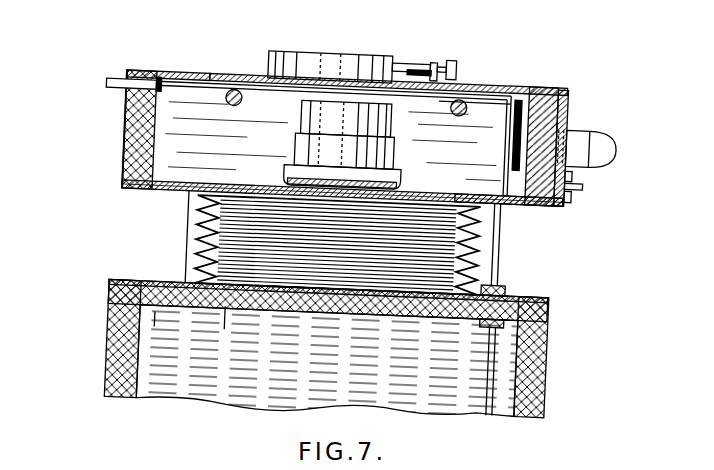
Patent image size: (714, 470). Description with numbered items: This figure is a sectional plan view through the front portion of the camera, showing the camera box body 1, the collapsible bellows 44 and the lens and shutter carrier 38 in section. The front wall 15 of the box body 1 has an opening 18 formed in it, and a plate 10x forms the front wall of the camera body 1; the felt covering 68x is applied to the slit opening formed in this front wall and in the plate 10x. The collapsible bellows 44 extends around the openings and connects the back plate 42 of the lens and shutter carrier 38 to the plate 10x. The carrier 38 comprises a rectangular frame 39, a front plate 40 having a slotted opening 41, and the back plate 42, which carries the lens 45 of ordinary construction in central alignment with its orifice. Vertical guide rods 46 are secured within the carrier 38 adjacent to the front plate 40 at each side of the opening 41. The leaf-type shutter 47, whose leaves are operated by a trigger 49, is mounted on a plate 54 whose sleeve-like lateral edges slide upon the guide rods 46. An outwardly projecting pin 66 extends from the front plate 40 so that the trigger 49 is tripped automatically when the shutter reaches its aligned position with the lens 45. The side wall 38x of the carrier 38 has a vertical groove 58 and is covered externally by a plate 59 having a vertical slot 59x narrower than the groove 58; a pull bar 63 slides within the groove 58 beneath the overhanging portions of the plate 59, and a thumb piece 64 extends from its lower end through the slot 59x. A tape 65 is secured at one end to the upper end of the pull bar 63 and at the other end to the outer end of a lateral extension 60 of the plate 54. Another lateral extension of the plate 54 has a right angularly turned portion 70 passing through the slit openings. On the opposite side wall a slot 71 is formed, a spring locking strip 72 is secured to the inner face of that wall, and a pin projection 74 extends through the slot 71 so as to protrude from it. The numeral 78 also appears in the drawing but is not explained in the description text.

The camera box body 1 is at (559, 344).
The plate 10x is at (568, 275).
The front wall 15 is at (160, 330).
The opening 18 is at (235, 328).
The lens and shutter carrier 38 is at (124, 129).
The side wall 38x is at (554, 74).
The rectangular frame 39 is at (131, 165).
The front plate 40 is at (220, 68).
The slotted opening 41 is at (257, 74).
The back plate 42 is at (537, 191).
The collapsible bellows 44 is at (200, 230).
The lens 45 is at (343, 145).
The vertical guide rods 46 is at (244, 100).
The shutter 47 is at (330, 58).
The trigger 49 is at (437, 56).
The plate 54 is at (367, 85).
The vertical groove 58 is at (576, 158).
The plate 59 is at (577, 178).
The vertical slot 59x is at (590, 138).
The lateral extension 60 is at (524, 71).
The pull bar 63 is at (583, 118).
The thumb piece 64 is at (593, 138).
The tape 65 is at (569, 102).
The pin 66 is at (462, 76).
The felt covering 68x is at (520, 271).
The right angularly turned portion 70 is at (476, 154).
The slot 71 is at (582, 313).
The spring locking strip 72 is at (162, 84).
The pin projection 74 is at (109, 87).
The rod 78 is at (580, 300).